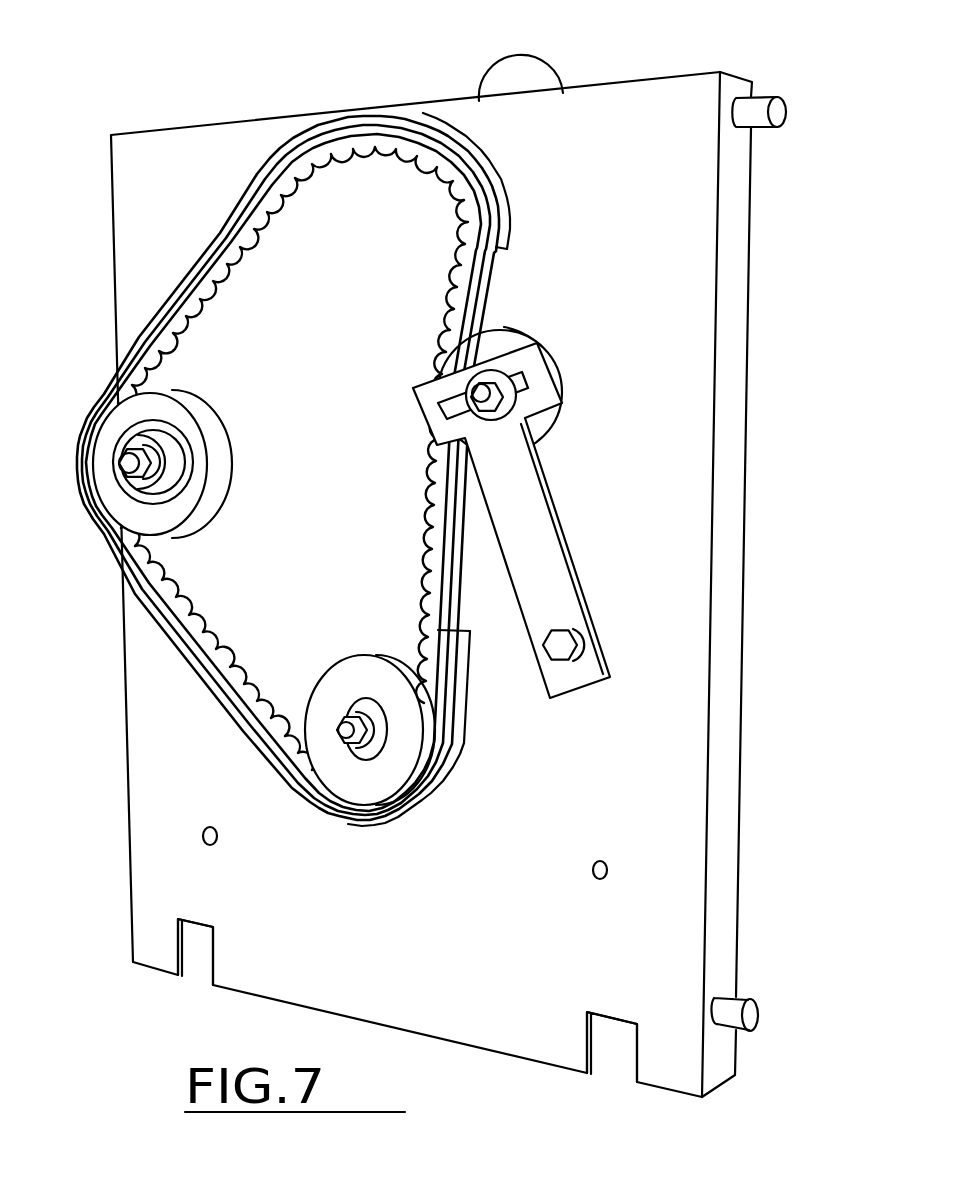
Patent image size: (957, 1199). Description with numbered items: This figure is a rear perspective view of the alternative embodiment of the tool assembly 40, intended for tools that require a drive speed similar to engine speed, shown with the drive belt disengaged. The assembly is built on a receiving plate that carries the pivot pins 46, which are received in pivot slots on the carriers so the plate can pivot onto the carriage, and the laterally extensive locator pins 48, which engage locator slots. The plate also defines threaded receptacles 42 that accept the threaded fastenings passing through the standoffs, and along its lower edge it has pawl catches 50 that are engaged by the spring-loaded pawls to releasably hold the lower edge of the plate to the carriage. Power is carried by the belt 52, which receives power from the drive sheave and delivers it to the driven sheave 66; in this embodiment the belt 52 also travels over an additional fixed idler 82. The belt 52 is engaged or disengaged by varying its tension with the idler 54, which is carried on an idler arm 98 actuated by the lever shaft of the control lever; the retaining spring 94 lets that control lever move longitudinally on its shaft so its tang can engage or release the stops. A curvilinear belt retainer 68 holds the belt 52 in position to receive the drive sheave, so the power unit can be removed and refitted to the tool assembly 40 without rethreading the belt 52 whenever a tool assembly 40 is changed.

The tool assembly 40 is at (462, 72).
The threaded receptacle 42 is at (200, 845).
The pivot pin 46 is at (783, 92).
The locator pin 48 is at (762, 1000).
The pawl catch 50 is at (210, 960).
The belt 52 is at (503, 268).
The idler 54 is at (596, 385).
The driven sheave 66 is at (403, 762).
The curvilinear belt retainer 68 is at (495, 183).
The fixed idler 82 is at (125, 503).
The retaining spring 94 is at (672, 520).
The idler arm 98 is at (572, 590).